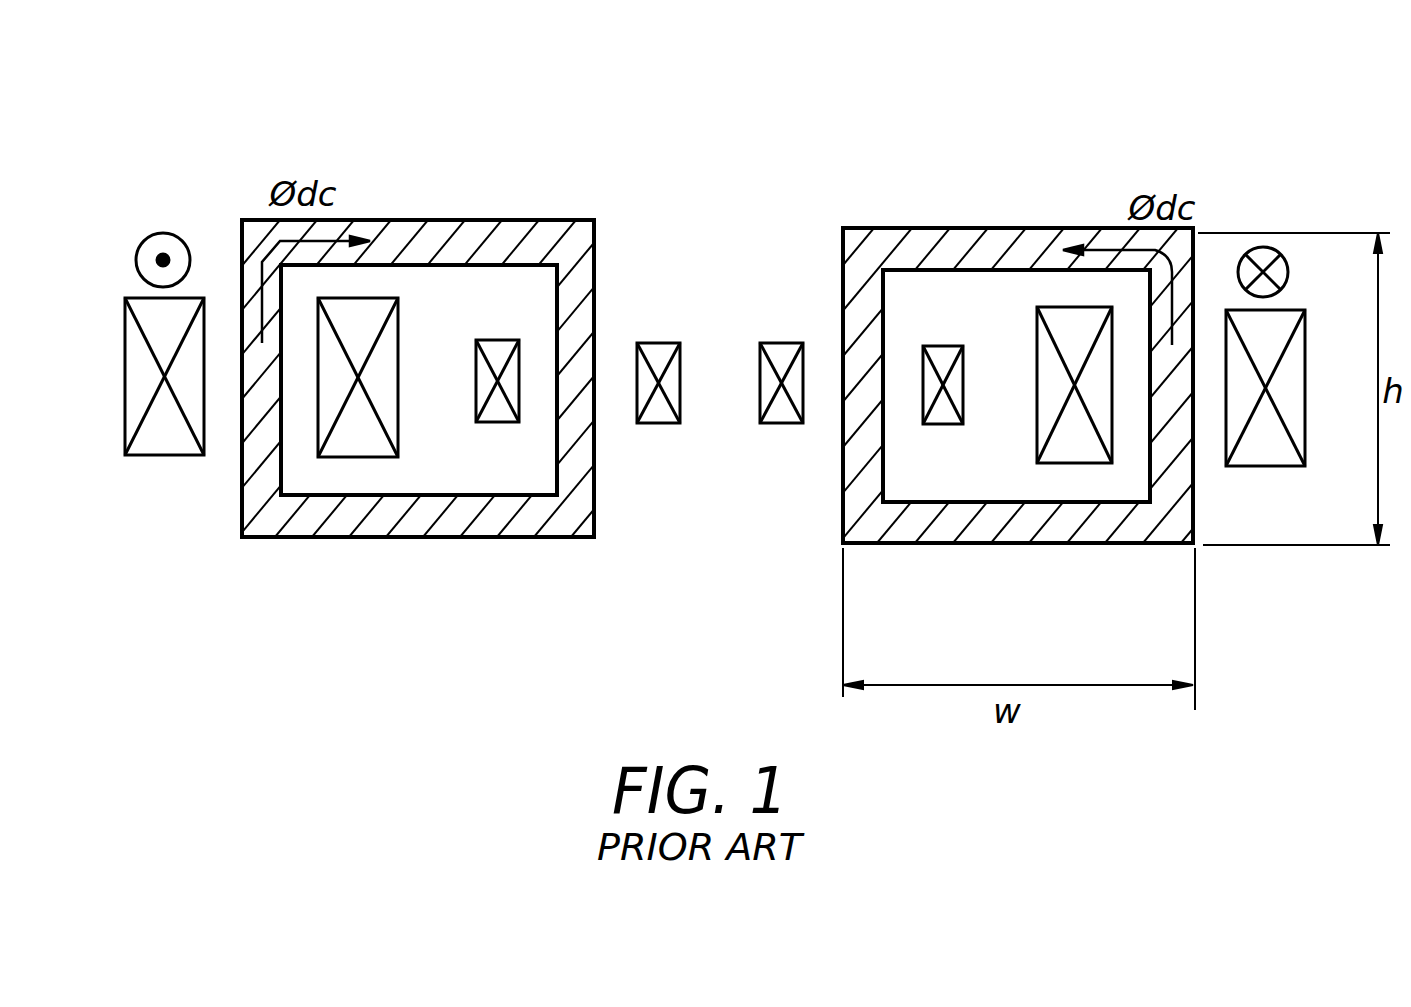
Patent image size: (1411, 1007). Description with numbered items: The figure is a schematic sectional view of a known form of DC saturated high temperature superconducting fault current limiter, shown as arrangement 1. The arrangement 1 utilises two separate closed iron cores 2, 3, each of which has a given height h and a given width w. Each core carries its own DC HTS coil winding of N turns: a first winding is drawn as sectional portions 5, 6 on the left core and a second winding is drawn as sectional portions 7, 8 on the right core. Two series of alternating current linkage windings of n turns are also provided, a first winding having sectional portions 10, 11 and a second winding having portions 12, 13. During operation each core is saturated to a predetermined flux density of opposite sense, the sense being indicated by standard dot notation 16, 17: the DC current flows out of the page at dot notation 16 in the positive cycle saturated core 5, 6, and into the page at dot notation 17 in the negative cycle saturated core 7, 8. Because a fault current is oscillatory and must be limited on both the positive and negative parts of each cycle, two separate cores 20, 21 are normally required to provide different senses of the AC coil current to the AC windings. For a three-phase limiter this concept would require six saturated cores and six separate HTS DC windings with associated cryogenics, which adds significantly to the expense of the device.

The arrangement 1 is at (284, 650).
The closed iron core 2 is at (510, 538).
The closed iron core 3 is at (1012, 545).
The sectional portion of first DC HTS coil winding 5 is at (147, 455).
The sectional portion of first DC HTS coil winding 6 is at (357, 457).
The sectional portion of second DC HTS coil winding 7 is at (1282, 466).
The sectional portion of second DC HTS coil winding 8 is at (1097, 463).
The sectional portion of first AC linkage winding 10 is at (505, 340).
The sectional portion of first AC linkage winding 11 is at (665, 425).
The portion of second AC linkage winding 12 is at (788, 425).
The portion of second AC linkage winding 13 is at (940, 346).
The dot notation 16 is at (150, 234).
The dot notation 17 is at (1288, 270).
The saturated core 20 is at (552, 141).
The saturated core 21 is at (1184, 136).